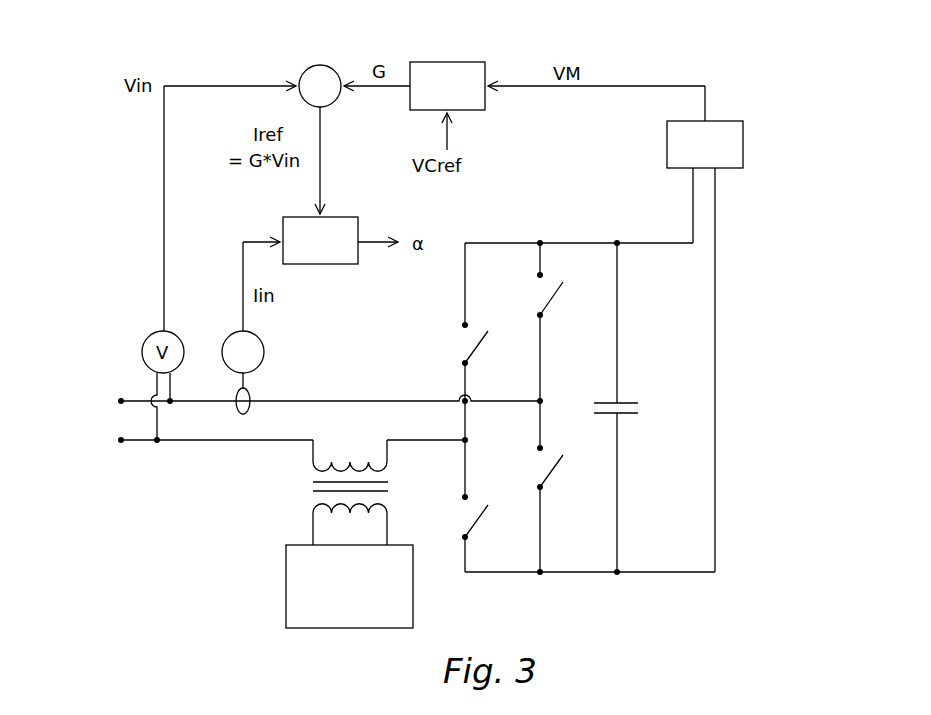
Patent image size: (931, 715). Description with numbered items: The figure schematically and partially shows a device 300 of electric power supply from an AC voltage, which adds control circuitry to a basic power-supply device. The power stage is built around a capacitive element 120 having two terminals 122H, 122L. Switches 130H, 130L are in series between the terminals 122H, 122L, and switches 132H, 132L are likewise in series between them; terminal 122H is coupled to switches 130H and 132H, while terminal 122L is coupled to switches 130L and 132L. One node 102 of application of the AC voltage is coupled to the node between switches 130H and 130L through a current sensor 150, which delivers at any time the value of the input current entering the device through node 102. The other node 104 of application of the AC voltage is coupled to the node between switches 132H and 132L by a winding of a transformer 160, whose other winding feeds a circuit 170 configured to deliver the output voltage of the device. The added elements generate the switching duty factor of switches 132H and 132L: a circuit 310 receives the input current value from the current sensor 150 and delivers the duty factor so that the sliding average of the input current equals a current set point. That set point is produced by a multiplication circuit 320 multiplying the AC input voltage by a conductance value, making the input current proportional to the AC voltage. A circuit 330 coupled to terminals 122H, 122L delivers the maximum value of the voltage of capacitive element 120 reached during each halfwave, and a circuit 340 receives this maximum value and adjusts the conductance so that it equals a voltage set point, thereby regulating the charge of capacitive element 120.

The device of electric power supply 300 is at (170, 46).
The multiplication circuit 320 is at (318, 64).
The circuit (CTRL) 340 is at (478, 62).
The circuit (MAX) 330 is at (745, 141).
The circuit (CTRL) 310 is at (335, 264).
The current sensor 150 is at (262, 367).
The node of application of the AC voltage 102 is at (118, 399).
The node of application of the AC voltage 104 is at (118, 442).
The transformer 160 is at (306, 478).
The circuit 170 is at (349, 586).
The terminal of the capacitive element 122H is at (575, 243).
The terminal of the capacitive element 122L is at (577, 573).
The switch 132H is at (461, 327).
The switch 132L is at (461, 499).
The switch 130H is at (546, 320).
The switch 130L is at (546, 492).
The capacitive element 120 is at (621, 400).